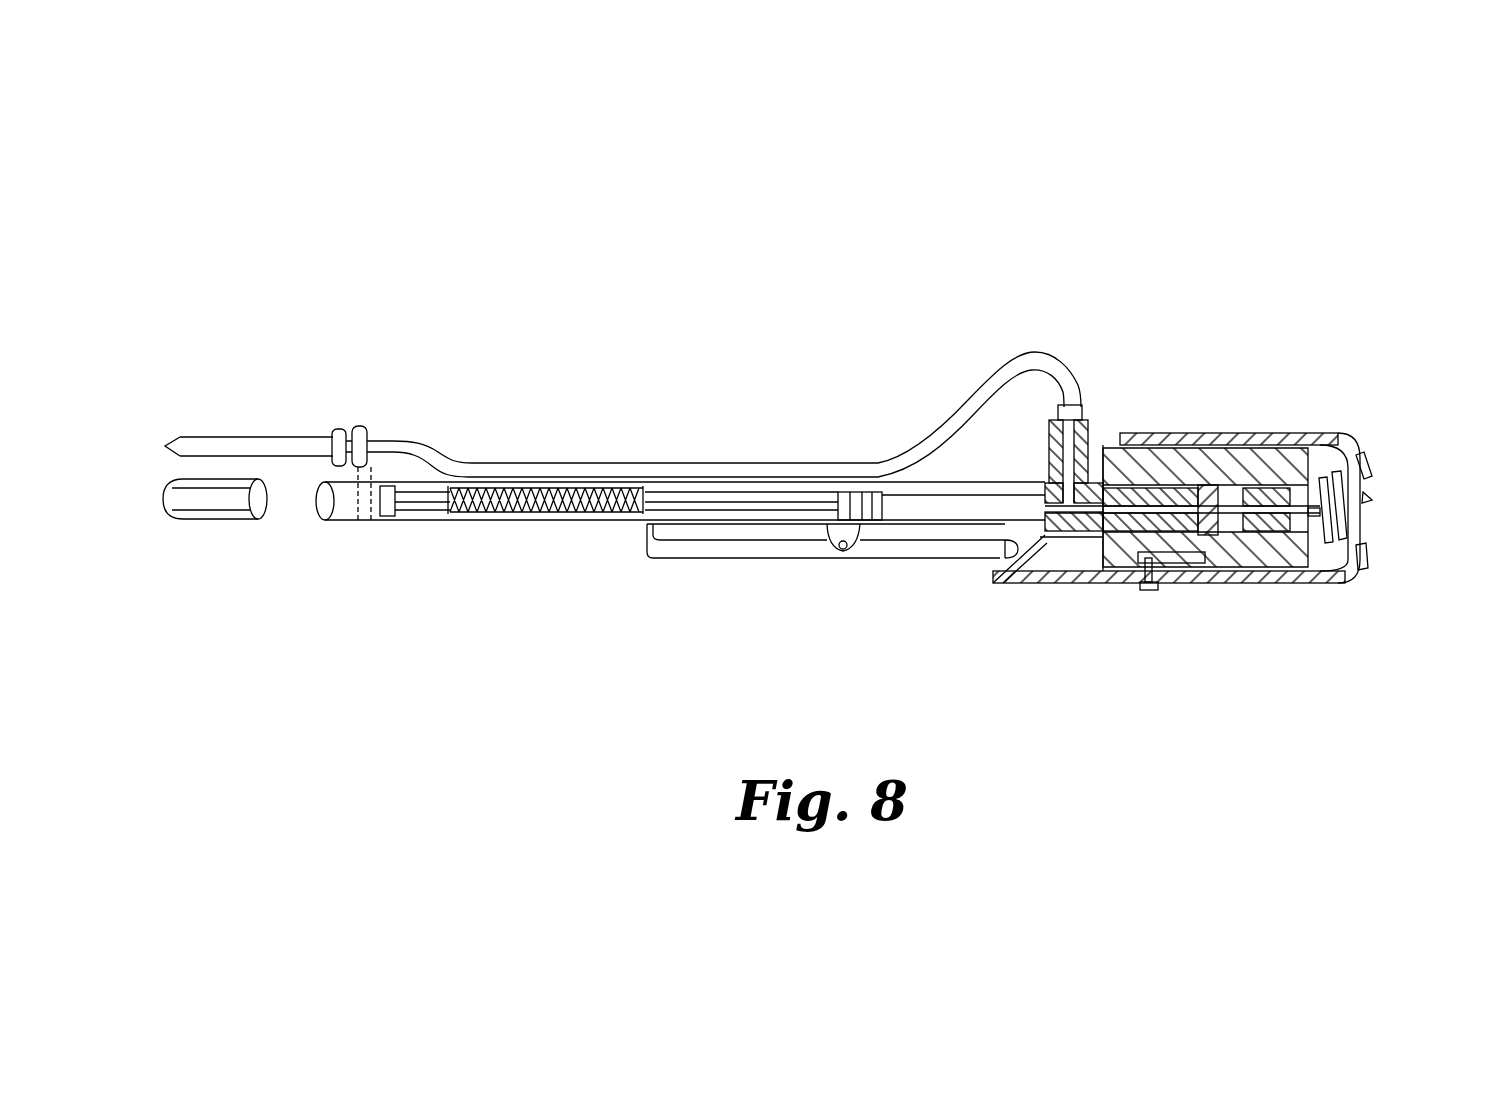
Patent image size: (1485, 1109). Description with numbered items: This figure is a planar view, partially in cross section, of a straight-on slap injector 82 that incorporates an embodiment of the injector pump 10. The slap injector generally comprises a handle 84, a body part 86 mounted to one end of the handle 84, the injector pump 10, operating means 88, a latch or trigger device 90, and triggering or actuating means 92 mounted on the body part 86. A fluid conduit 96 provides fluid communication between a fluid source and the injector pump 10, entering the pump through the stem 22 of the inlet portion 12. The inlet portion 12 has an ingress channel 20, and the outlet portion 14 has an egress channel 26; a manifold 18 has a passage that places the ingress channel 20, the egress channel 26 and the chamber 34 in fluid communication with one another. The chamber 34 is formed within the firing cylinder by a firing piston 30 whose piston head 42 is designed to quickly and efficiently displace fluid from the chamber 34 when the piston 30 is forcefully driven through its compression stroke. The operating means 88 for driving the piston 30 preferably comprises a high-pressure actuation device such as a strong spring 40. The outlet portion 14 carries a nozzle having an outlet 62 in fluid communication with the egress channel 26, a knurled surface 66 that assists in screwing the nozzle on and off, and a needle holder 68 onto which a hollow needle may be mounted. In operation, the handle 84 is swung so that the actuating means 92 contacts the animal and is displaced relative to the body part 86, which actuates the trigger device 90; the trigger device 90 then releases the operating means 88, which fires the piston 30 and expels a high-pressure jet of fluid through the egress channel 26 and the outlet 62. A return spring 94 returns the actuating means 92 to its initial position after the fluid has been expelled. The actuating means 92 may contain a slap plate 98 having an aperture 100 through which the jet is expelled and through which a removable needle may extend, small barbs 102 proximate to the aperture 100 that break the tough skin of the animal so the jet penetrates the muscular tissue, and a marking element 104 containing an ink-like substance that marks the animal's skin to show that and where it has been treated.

The injector pump 10 is at (1122, 396).
The inlet portion 12 is at (1047, 473).
The outlet portion 14 is at (1150, 500).
The manifold 18 is at (1068, 543).
The ingress channel 20 is at (1055, 446).
The stem 22 is at (1079, 418).
The egress channel 26 is at (1140, 510).
The firing piston 30 is at (730, 498).
The chamber 34 is at (965, 512).
The spring 40 is at (465, 512).
The piston head 42 is at (883, 486).
The outlet 62 is at (1326, 556).
The knurled surface 66 is at (1225, 505).
The needle holder 68 is at (1248, 555).
The straight-on slap injector 82 is at (676, 370).
The handle 84 is at (232, 521).
The body part 86 is at (1107, 560).
The operating means 88 is at (534, 573).
The trigger device 90 is at (820, 588).
The actuating means 92 is at (1270, 628).
The spring 94 is at (1333, 473).
The fluid conduit 96 is at (492, 463).
The slap plate 98 is at (1366, 541).
The aperture 100 is at (1388, 522).
The barbs 102 is at (1370, 497).
The marking element 104 is at (1366, 497).